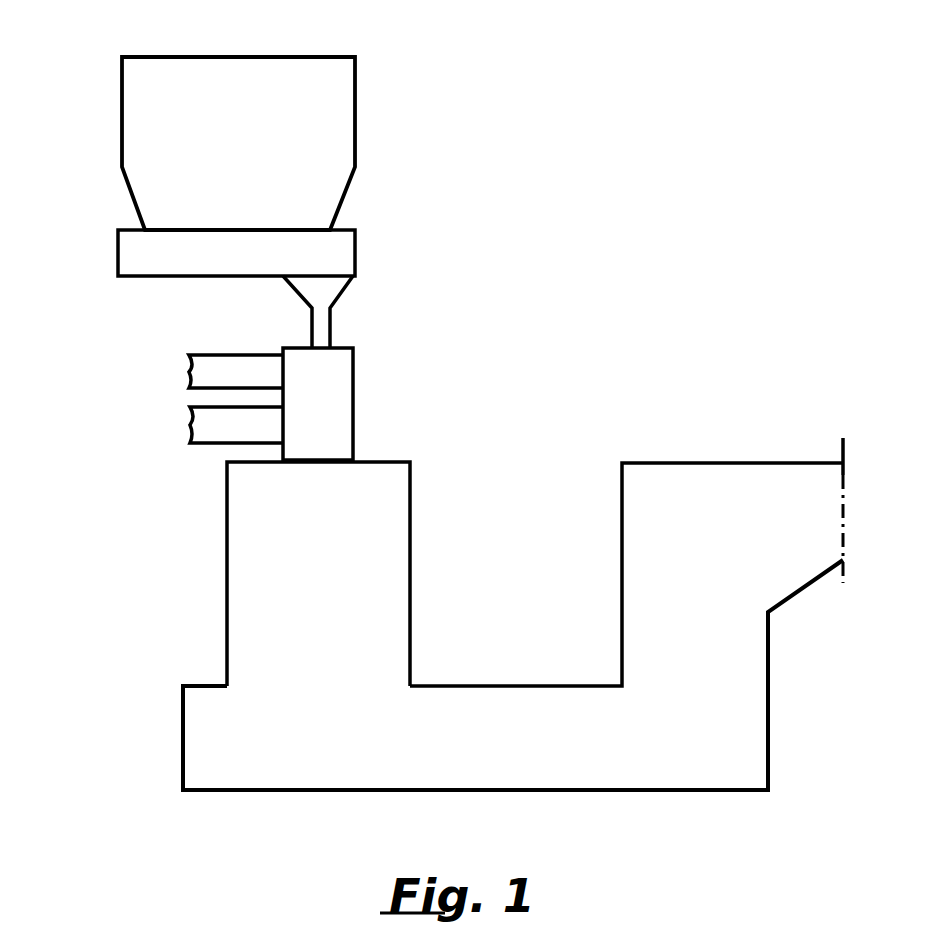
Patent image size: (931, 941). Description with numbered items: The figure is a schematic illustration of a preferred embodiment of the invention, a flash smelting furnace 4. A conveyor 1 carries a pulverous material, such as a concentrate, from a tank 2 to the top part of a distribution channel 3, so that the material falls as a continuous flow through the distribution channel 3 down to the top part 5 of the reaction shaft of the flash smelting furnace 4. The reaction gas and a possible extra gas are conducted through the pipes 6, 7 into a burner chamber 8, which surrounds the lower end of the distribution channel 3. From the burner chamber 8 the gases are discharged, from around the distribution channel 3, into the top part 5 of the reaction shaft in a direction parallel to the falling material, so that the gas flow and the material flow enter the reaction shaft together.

The conveyor 1 is at (128, 255).
The tank 2 is at (327, 100).
The distribution channel 3 is at (318, 327).
The flash smelting furnace 4 is at (222, 602).
The top part of the reaction shaft 5 is at (370, 490).
The pipe 6 is at (207, 423).
The pipe 7 is at (207, 370).
The burner chamber 8 is at (330, 403).